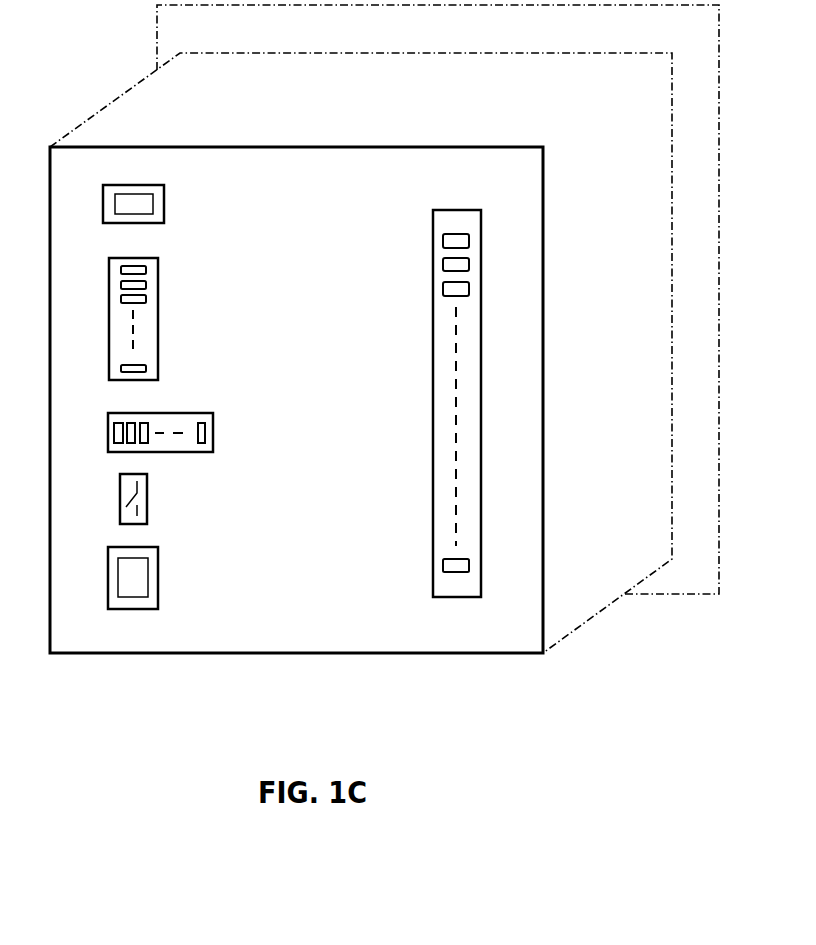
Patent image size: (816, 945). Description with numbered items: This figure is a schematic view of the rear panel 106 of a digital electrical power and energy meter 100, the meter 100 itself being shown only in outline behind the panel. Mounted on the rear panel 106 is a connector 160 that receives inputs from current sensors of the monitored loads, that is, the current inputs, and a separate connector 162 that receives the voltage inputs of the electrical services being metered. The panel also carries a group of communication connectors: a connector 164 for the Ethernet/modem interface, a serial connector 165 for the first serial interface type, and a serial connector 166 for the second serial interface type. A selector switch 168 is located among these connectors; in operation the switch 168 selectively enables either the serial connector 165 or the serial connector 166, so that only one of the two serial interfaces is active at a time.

The meter 100 is at (145, 128).
The rear panel 106 is at (278, 618).
The connector 160 is at (433, 329).
The connector 162 is at (158, 310).
The connector 164 is at (164, 203).
The RS-232 connector 165 is at (213, 427).
The RS-485 connector 166 is at (158, 583).
The selector switch 168 is at (147, 493).